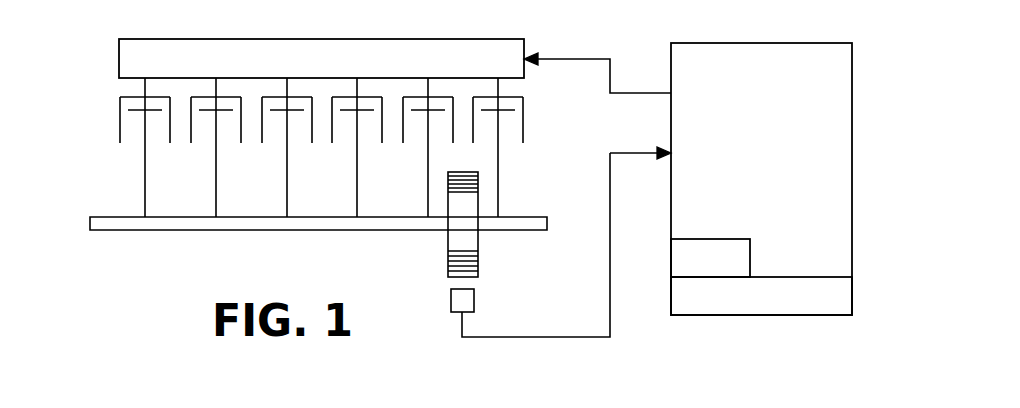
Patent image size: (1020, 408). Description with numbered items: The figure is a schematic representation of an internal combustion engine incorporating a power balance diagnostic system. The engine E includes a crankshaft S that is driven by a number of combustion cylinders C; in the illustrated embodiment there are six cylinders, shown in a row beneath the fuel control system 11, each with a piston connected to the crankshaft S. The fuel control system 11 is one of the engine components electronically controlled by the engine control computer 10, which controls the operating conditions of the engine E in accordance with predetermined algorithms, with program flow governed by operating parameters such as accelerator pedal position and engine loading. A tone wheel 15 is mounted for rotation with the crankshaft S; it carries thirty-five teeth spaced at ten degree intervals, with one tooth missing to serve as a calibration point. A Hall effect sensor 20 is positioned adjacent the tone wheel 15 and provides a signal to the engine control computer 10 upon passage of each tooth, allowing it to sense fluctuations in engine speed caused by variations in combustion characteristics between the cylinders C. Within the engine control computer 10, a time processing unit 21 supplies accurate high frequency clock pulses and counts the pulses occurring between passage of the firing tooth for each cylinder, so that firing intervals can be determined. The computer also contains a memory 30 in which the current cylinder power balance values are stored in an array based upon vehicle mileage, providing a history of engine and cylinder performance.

The engine control computer 10 is at (799, 185).
The fuel control system 11 is at (510, 39).
The tone wheel 15 is at (448, 240).
The Hall effect sensor 20 is at (474, 301).
The time processing unit 21 is at (750, 258).
The memory 30 is at (852, 296).
The combustion cylinders C is at (120, 118).
The engine E is at (289, 186).
The crankshaft S is at (121, 230).